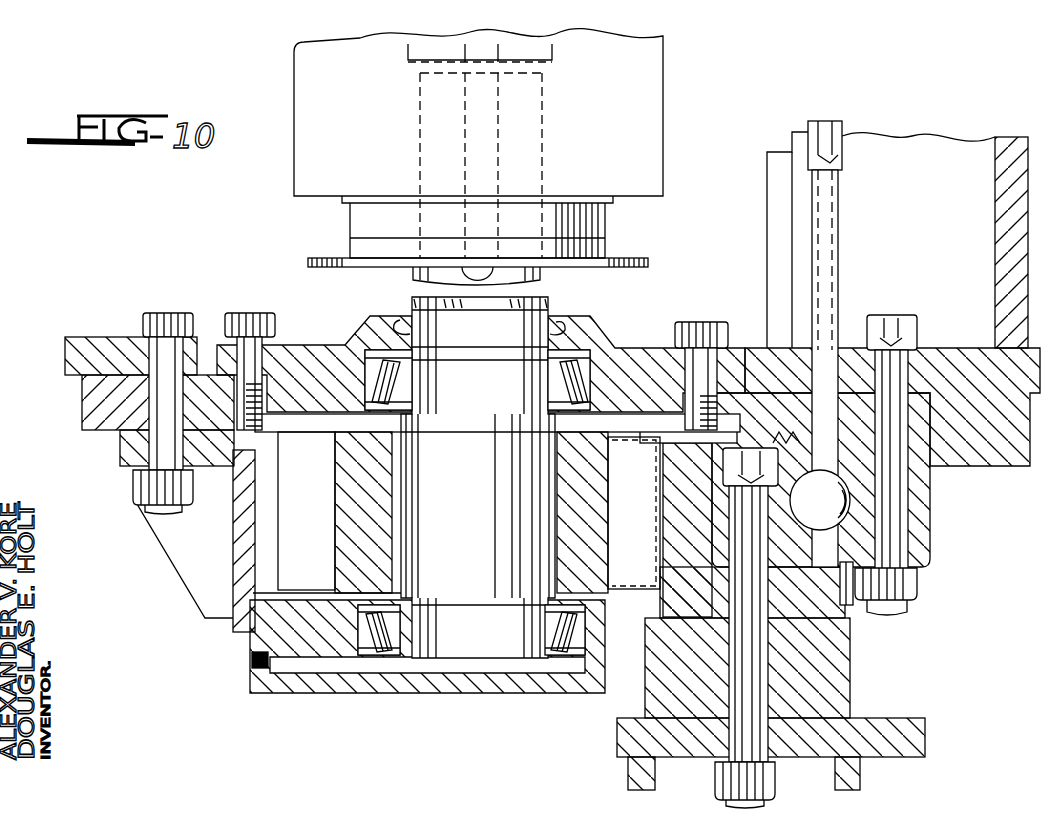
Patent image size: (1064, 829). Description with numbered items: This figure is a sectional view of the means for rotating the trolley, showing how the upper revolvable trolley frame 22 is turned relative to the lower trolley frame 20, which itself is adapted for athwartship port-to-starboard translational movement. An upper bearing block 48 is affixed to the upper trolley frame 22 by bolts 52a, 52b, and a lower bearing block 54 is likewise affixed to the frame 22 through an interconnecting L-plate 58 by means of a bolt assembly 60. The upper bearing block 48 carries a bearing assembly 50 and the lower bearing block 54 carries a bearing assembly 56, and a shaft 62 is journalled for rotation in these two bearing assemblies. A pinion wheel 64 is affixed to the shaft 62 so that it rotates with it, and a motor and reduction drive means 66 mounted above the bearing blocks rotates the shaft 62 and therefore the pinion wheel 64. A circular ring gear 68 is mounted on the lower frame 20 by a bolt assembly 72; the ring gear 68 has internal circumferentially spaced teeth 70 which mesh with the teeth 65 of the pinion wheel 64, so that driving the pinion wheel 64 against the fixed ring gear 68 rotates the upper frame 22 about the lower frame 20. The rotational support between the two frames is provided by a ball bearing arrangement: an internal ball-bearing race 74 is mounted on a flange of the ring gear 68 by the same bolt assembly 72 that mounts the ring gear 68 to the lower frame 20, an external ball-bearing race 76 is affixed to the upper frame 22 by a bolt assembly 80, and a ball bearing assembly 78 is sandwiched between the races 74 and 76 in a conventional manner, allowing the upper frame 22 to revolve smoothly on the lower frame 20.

The lower trolley frame 20 is at (902, 720).
The upper revolvable trolley frame 22 is at (82, 405).
The upper bearing block 48 is at (313, 352).
The bearing assembly 50 is at (577, 388).
The bolt 52a is at (258, 313).
The bolt 52b is at (706, 322).
The lower bearing block 54 is at (270, 640).
The bearing assembly 56 is at (540, 635).
The L-plate 58 is at (185, 535).
The bolt assembly 60 is at (175, 313).
The shaft 62 is at (520, 313).
The pinion wheel 64 is at (356, 497).
The teeth 65 is at (303, 527).
The motor and reduction drive means 66 is at (318, 180).
The circular ring gear 68 is at (820, 580).
The internal circumferentially spaced teeth 70 is at (638, 585).
The bolt assembly 72 is at (718, 780).
The internal ball-bearing race 74 is at (848, 604).
The external ball-bearing race 76 is at (917, 484).
The ball bearing assembly 78 is at (806, 512).
The bolt assembly 80 is at (912, 326).